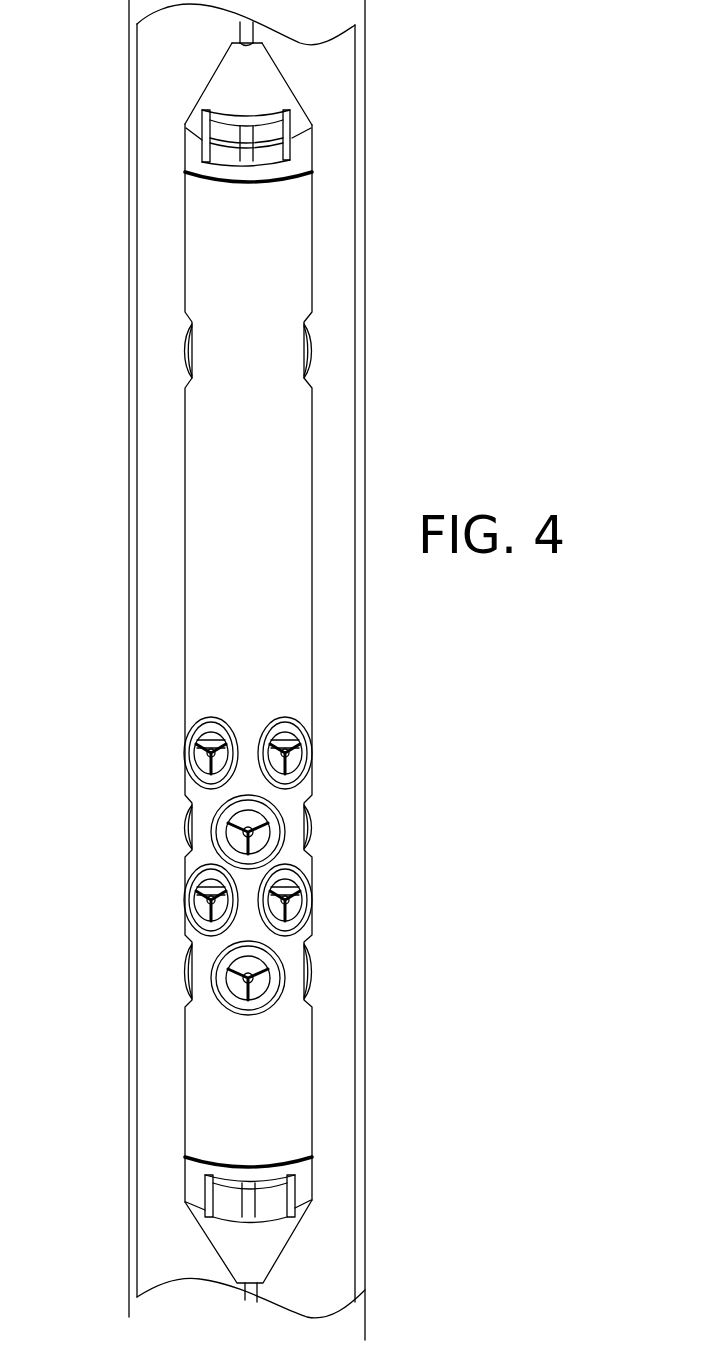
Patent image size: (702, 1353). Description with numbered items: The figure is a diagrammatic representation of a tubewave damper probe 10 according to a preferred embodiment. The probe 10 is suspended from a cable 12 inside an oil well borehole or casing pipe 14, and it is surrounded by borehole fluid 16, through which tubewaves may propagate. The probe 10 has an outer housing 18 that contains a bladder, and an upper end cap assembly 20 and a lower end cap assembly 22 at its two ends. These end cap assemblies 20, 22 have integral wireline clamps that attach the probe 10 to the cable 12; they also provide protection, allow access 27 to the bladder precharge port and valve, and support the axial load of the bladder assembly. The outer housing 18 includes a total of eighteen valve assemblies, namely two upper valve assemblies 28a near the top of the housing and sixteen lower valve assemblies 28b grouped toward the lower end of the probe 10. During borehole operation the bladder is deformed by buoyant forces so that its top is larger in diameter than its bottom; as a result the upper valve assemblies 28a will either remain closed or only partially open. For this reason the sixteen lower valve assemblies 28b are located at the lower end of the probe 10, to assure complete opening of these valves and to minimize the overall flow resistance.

The tubewave damper probe 10 is at (120, 623).
The cable 12 is at (246, 152).
The casing pipe 14 is at (134, 101).
The borehole fluid 16 is at (342, 193).
The outer housing 18 is at (272, 256).
The upper end cap assembly 20 is at (211, 61).
The lower end cap assembly 22 is at (318, 1175).
The access 27 is at (274, 122).
The upper valve assemblies 28a is at (315, 342).
The lower valve assemblies 28b is at (322, 807).